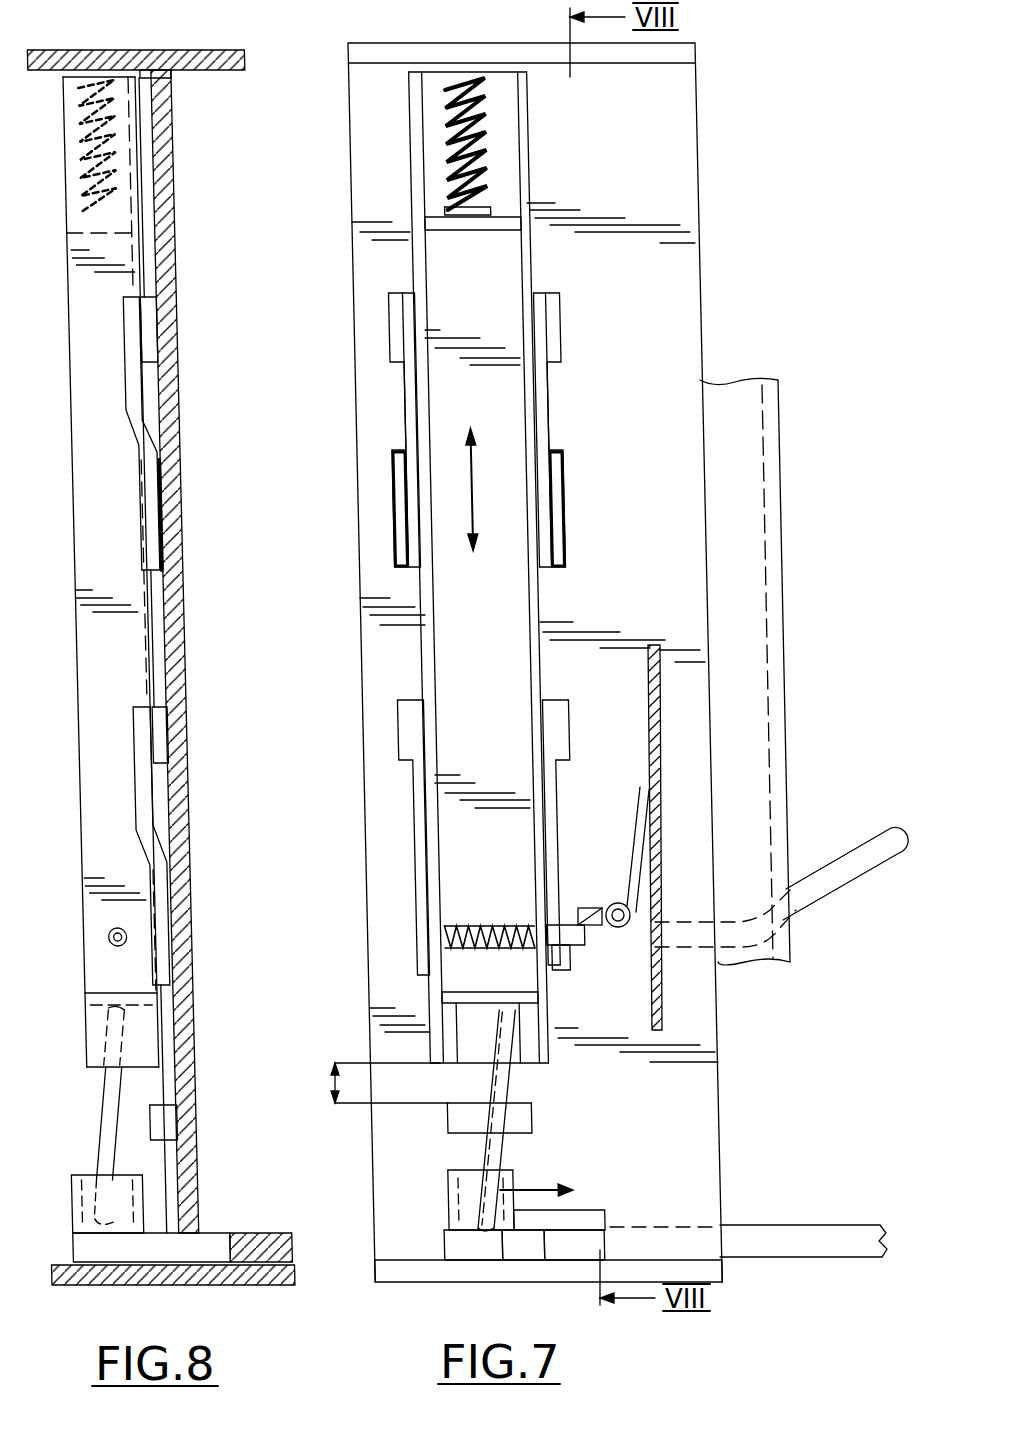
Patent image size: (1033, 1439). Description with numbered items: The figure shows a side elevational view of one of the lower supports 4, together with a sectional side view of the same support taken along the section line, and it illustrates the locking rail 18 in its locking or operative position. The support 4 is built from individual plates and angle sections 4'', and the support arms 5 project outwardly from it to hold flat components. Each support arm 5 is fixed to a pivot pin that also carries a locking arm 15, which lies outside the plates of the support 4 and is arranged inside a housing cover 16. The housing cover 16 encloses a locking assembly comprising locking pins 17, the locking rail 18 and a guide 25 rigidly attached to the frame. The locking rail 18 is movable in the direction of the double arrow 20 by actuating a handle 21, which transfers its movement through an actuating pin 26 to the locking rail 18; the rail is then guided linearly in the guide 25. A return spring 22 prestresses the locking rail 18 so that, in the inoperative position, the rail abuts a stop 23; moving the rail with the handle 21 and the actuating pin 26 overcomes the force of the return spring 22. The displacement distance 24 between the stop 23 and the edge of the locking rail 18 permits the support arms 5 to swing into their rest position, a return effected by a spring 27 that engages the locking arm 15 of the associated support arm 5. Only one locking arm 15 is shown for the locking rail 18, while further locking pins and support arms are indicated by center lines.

In FIG. 7, the support 4 is at (559, 662).
In FIG. 7, the angle section 4'' is at (770, 671).
In FIG. 7, the support arm 5 is at (840, 862).
In FIG. 7, the locking arm 15 is at (597, 905).
In FIG. 7, the housing cover 16 is at (655, 882).
In FIG. 7, the locking pin 17 is at (574, 950).
In FIG. 8, the locking pin 17 is at (108, 938).
In FIG. 7, the locking rail 18 is at (432, 262).
In FIG. 8, the locking rail 18 is at (77, 328).
In FIG. 7, the double arrow 20 is at (472, 490).
In FIG. 7, the handle 21 is at (817, 1228).
In FIG. 7, the return spring 22 is at (488, 170).
In FIG. 7, the stop 23 is at (520, 1122).
In FIG. 8, the stop 23 is at (160, 1120).
In FIG. 7, the displacement distance 24 is at (330, 1082).
In FIG. 7, the guide 25 is at (396, 368).
In FIG. 8, the guide 25 is at (133, 388).
In FIG. 7, the actuating pin 26 is at (470, 1140).
In FIG. 8, the actuating pin 26 is at (100, 1105).
In FIG. 7, the spring 27 is at (625, 930).